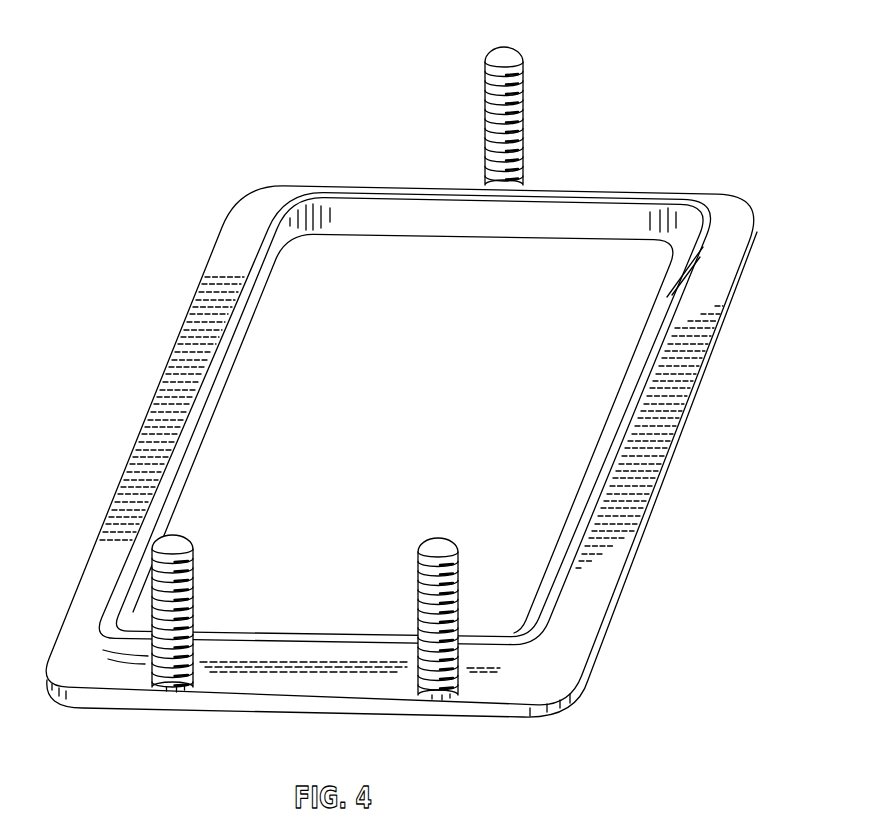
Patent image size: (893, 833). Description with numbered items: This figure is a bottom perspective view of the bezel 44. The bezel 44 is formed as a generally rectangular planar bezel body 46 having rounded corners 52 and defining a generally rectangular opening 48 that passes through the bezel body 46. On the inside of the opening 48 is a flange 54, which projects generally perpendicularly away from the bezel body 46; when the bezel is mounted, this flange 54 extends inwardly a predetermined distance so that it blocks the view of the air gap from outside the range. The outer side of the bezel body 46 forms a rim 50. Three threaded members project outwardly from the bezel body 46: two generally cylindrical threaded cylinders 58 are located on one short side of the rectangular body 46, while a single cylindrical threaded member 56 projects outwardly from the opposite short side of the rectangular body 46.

The bezel 44 is at (440, 412).
The bezel body 46 is at (200, 227).
The opening 48 is at (391, 268).
The rim 50 is at (686, 422).
The rounded corners 52 is at (88, 670).
The flange 54 is at (653, 322).
The cylindrical threaded member 56 is at (523, 102).
The threaded cylinders 58 is at (167, 663).